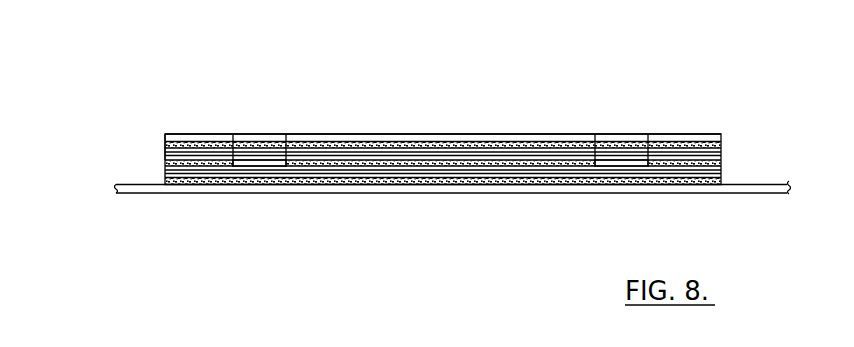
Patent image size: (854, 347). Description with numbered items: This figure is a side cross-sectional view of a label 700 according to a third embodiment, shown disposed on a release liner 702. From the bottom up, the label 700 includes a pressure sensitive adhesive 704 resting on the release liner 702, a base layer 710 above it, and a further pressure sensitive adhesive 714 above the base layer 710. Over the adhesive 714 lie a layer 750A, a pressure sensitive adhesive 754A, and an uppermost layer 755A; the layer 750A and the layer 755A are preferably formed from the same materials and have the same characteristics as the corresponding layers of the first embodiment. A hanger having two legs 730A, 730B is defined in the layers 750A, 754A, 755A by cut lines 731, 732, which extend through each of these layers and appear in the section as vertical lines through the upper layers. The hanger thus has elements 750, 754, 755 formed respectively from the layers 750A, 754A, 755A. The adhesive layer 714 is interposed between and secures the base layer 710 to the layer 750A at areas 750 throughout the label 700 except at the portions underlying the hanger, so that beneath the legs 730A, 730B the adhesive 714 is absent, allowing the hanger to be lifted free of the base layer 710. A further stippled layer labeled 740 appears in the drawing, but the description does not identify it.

The label 700 is at (562, 66).
The release liner 702 is at (500, 190).
The pressure sensitive adhesive 704 is at (573, 182).
The base layer 710 is at (721, 170).
The pressure sensitive adhesive 714 is at (721, 152).
The leg 730A is at (250, 106).
The leg 730B is at (586, 114).
The cut line 731 is at (240, 138).
The cut line 732 is at (288, 146).
The adhesive layer 740 is at (217, 166).
The element 750 is at (257, 147).
The layer 750A is at (172, 157).
The element 754 is at (268, 145).
The pressure sensitive adhesive 754A is at (165, 147).
The element 755 is at (278, 138).
The layer 755A is at (170, 134).